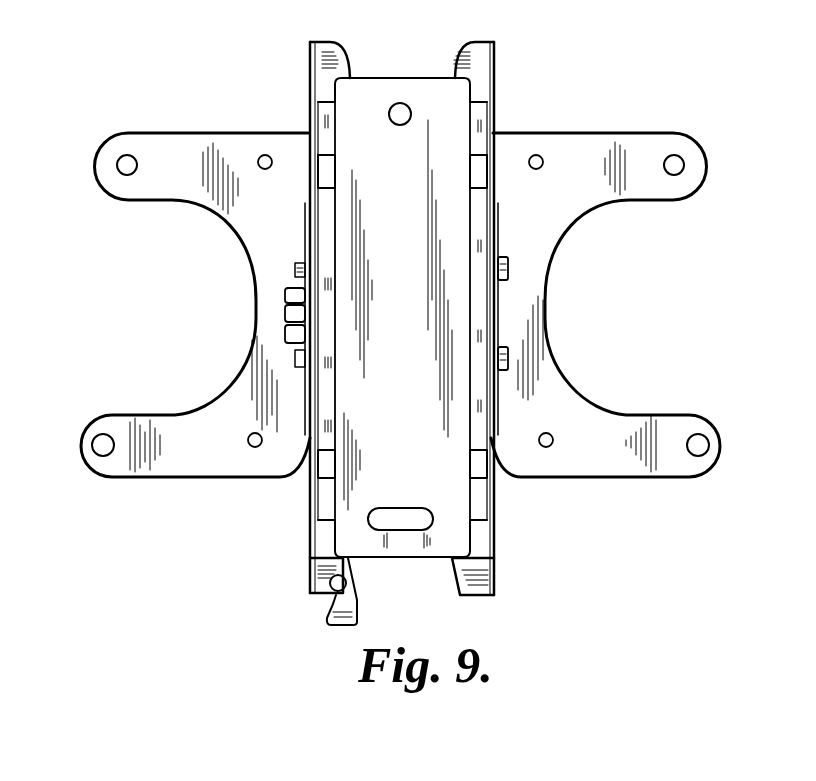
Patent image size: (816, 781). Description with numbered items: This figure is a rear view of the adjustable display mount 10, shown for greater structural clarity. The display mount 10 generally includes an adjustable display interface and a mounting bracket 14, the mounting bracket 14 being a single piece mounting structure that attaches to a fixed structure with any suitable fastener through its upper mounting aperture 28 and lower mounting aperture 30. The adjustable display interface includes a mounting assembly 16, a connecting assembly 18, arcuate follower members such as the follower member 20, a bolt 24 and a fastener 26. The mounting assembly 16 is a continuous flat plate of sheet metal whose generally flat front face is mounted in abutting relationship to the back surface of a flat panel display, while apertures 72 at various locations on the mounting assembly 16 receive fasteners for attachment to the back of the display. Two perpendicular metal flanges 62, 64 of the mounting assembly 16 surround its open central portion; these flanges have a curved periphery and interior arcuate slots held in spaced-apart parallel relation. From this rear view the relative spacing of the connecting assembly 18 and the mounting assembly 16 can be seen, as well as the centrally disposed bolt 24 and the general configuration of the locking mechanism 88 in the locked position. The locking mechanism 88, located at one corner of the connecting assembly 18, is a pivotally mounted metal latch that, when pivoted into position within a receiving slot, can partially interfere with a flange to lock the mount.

The adjustable display mount 10 is at (401, 314).
The mounting bracket 14 is at (438, 280).
The mounting assembly 16 is at (606, 152).
The connecting assembly 18 is at (486, 63).
The arcuate follower member 20 is at (297, 267).
The bolt 24 is at (507, 308).
The fastener 26 is at (283, 331).
The upper mounting aperture 28 is at (399, 110).
The lower mounting aperture 30 is at (423, 521).
The perpendicular metal flange 62 is at (300, 221).
The perpendicular metal flange 64 is at (505, 385).
The aperture 72 is at (127, 165).
The locking mechanism 88 is at (357, 612).